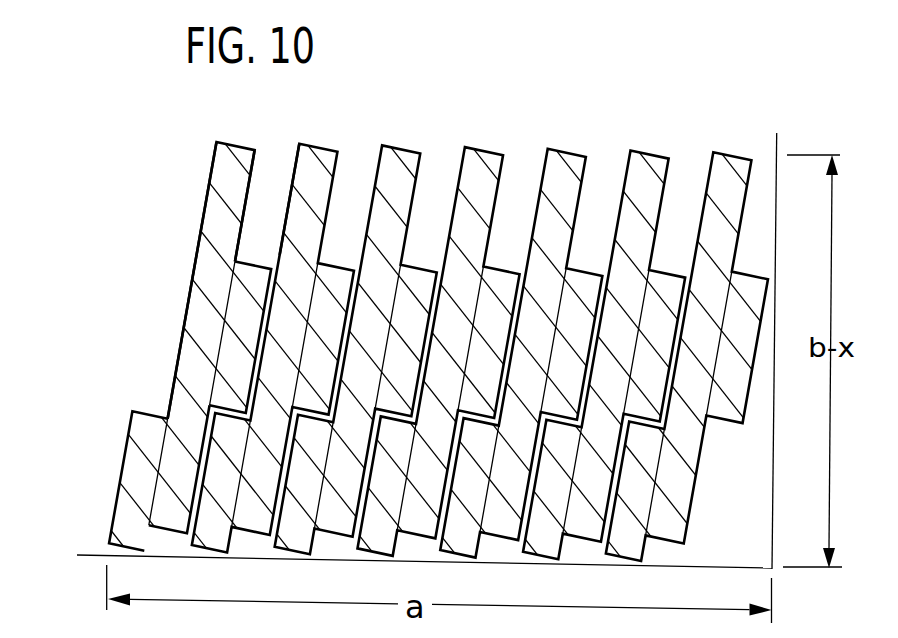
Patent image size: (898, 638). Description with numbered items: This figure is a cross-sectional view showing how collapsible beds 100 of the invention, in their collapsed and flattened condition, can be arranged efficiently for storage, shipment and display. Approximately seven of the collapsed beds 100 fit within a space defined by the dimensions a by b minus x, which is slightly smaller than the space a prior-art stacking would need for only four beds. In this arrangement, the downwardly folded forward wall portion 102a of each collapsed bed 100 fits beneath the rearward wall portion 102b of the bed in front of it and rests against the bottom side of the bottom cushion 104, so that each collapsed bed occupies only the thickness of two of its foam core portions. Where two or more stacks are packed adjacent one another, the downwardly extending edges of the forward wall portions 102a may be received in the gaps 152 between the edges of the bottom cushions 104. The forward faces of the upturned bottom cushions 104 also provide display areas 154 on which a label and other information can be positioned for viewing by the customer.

The collapsible bed 100 is at (405, 358).
The forward wall portion 102a is at (136, 445).
The rearward wall portion 102b is at (233, 287).
The bottom cushion 104 is at (198, 297).
The gaps 152 is at (277, 150).
The display areas 154 is at (158, 322).